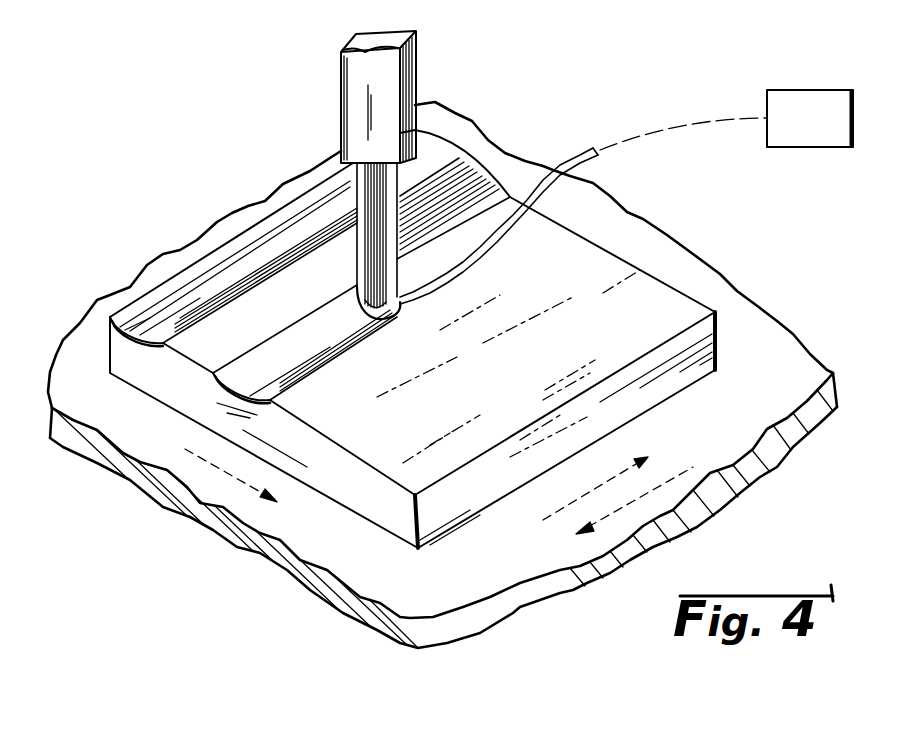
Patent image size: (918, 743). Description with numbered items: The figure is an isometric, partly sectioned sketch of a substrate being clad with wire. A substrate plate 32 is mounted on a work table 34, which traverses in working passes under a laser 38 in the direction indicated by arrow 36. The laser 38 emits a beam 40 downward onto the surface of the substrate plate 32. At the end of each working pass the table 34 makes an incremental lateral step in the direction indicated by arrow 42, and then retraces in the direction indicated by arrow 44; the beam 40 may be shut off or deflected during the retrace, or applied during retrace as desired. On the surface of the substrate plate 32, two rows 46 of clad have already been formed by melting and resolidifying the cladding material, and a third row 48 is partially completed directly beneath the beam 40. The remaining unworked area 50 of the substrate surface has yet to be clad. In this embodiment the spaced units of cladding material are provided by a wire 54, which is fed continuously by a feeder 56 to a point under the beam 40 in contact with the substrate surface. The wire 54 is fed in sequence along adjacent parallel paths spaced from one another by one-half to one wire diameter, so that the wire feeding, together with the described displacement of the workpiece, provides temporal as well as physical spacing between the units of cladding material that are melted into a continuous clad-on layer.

The substrate plate 32 is at (153, 381).
The work table 34 is at (437, 607).
The arrow 36 is at (692, 465).
The laser 38 is at (416, 44).
The beam 40 is at (357, 196).
The arrow 42 is at (185, 449).
The arrow 44 is at (543, 520).
The rows of clad 46 is at (277, 303).
The third row 48 is at (338, 330).
The unworked area 50 is at (590, 283).
The wire 54 is at (566, 156).
The feeder 56 is at (791, 88).